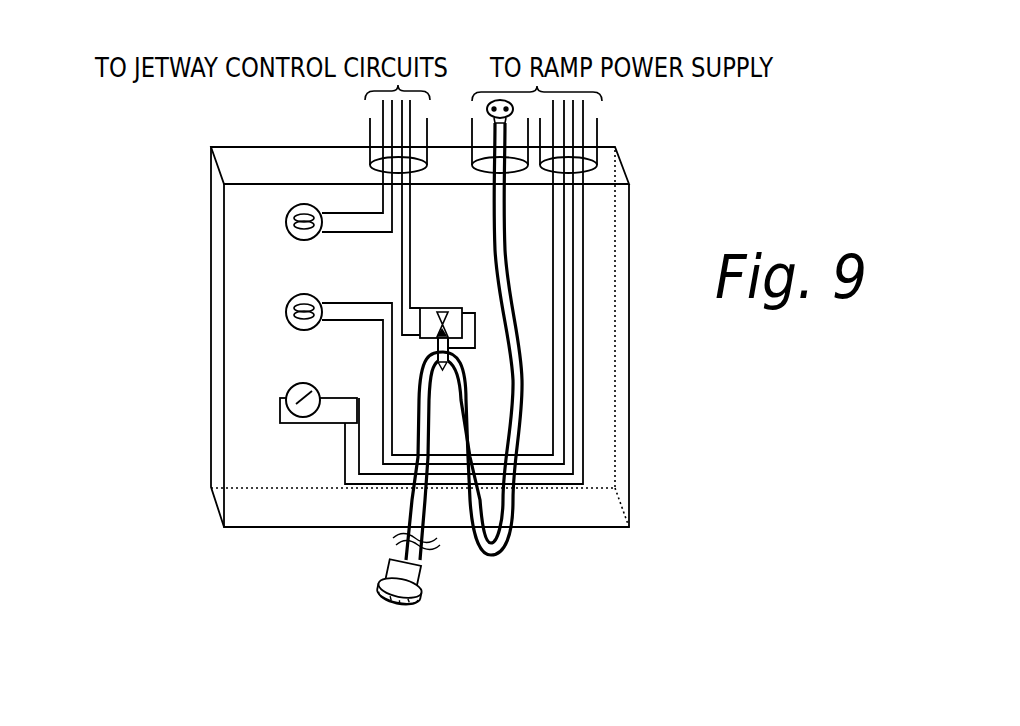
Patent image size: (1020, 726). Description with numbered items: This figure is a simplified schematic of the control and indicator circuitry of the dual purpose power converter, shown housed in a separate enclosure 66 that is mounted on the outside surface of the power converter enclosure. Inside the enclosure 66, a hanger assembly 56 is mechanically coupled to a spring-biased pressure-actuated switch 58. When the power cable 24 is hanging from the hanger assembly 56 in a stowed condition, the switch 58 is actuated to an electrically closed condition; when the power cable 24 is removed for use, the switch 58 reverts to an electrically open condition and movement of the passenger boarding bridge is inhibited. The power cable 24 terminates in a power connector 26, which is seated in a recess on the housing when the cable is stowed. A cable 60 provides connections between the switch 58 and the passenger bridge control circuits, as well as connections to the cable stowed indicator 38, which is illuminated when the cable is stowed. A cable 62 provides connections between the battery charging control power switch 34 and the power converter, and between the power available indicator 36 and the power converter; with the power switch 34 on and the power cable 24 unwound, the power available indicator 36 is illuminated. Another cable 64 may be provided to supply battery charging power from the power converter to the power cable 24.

The power cable 24 is at (473, 445).
The power connector 26 is at (408, 577).
The power switch 34 is at (290, 392).
The power available indicator 36 is at (286, 308).
The cable stowed indicator 38 is at (286, 222).
The hanger assembly 56 is at (477, 334).
The spring-biased pressure-actuated switch 58 is at (445, 306).
The cable 60 is at (383, 131).
The cable 62 is at (584, 113).
The cable 64 is at (507, 135).
The separate enclosure 66 is at (622, 293).